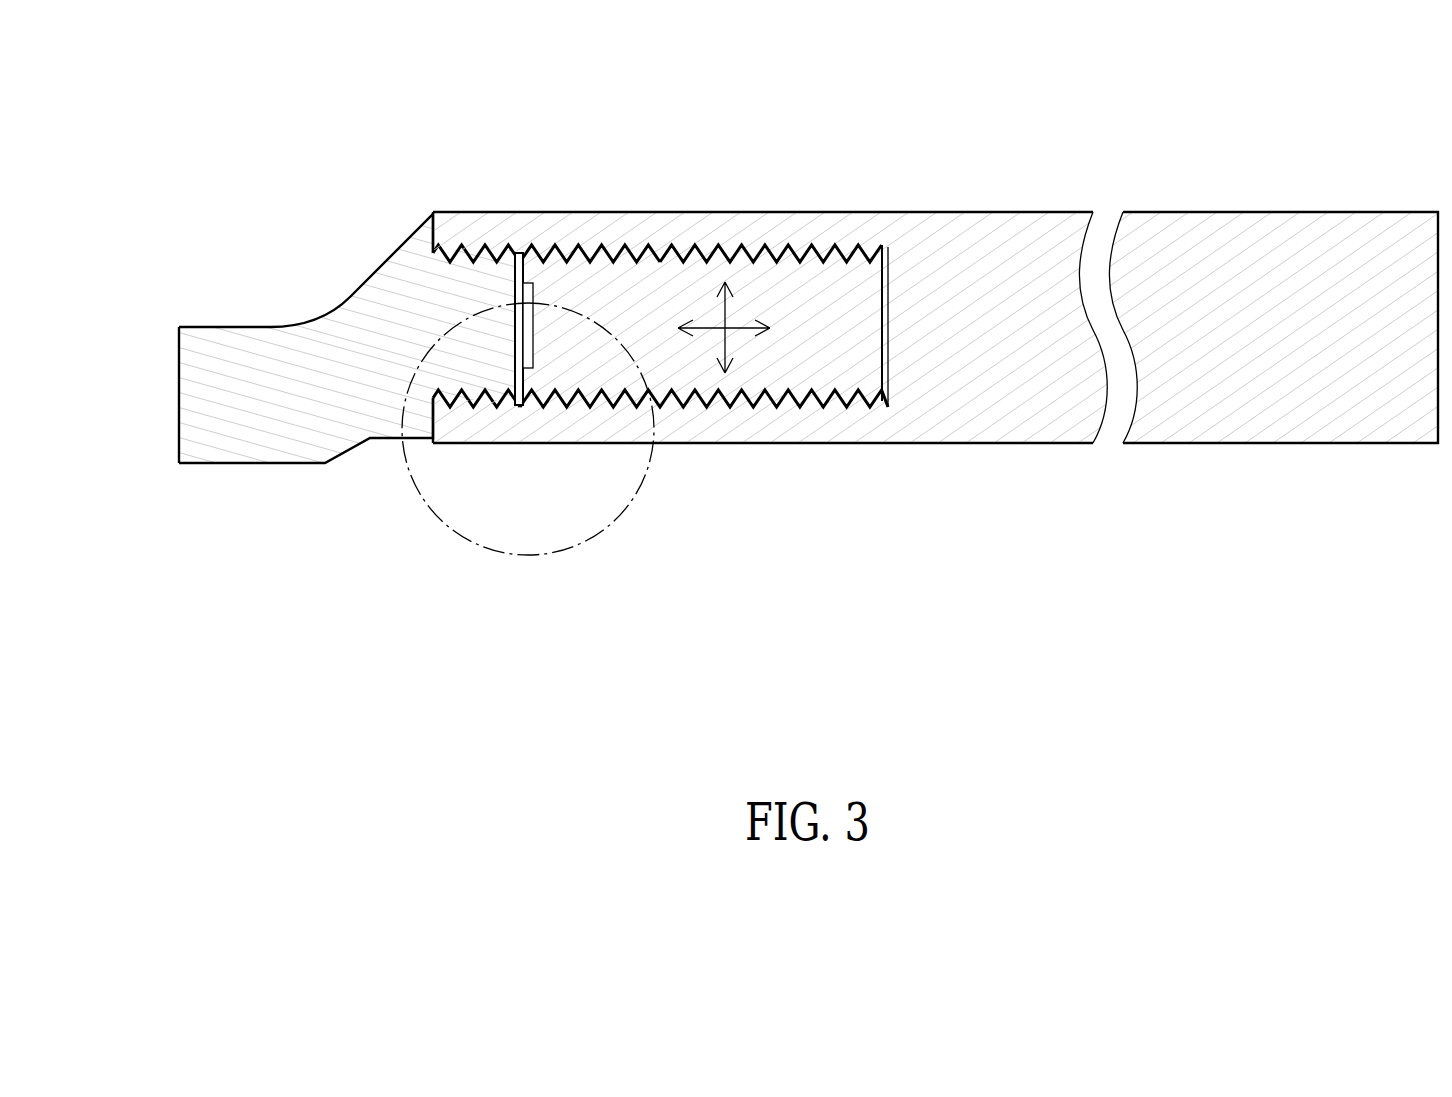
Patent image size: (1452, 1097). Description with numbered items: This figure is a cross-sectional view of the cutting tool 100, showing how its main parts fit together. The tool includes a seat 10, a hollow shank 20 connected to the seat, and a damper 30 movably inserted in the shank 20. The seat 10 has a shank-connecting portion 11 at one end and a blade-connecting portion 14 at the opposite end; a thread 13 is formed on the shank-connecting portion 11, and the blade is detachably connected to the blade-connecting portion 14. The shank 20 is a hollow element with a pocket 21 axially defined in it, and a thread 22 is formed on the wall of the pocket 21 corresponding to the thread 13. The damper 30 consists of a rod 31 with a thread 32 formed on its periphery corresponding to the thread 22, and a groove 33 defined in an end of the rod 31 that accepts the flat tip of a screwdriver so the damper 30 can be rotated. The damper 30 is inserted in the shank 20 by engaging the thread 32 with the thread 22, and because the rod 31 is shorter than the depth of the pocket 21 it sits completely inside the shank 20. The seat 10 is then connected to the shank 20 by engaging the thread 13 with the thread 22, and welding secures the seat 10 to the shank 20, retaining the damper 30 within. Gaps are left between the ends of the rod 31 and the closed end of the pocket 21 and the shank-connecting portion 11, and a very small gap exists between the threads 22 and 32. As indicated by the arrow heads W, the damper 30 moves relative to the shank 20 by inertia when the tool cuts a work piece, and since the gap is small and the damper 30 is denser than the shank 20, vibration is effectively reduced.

The cutting tool 100 is at (775, 340).
The seat 10 is at (321, 370).
The shank-connecting portion 11 is at (473, 353).
The thread 13 is at (465, 247).
The blade-connecting portion 14 is at (178, 380).
The shank 20 is at (775, 329).
The pocket 21 is at (868, 290).
The thread 22 is at (784, 407).
The damper 30 is at (608, 439).
The rod 31 is at (607, 265).
The thread 32 is at (722, 240).
The groove 33 is at (505, 353).
The arrow heads W is at (725, 308).